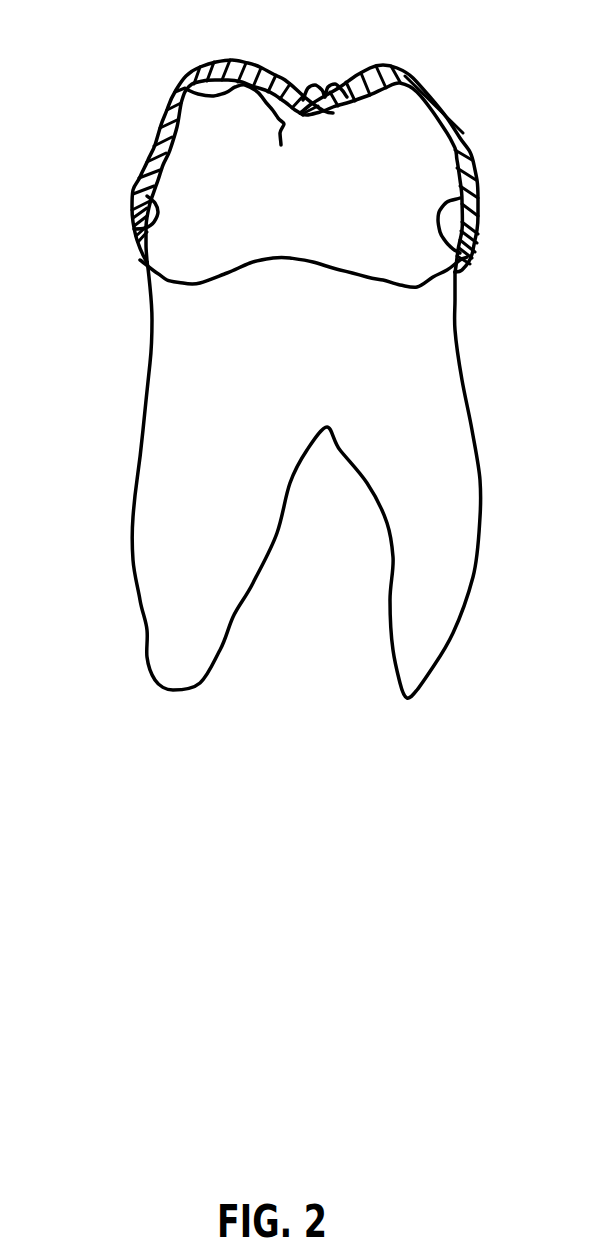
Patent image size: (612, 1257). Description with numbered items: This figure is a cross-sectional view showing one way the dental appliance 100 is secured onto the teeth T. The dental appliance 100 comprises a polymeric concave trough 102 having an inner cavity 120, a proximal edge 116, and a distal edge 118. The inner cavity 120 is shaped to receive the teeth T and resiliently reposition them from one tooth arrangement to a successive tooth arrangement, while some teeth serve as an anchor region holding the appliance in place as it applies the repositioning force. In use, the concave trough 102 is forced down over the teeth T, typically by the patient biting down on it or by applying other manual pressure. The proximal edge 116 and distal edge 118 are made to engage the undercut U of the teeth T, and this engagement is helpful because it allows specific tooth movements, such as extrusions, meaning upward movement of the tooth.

The dental appliance 100 is at (330, 137).
The polymeric concave trough 102 is at (464, 132).
The proximal edge 116 is at (133, 224).
The distal edge 118 is at (468, 257).
The inner cavity 120 is at (195, 84).
The undercut U is at (135, 193).
The teeth T is at (183, 250).